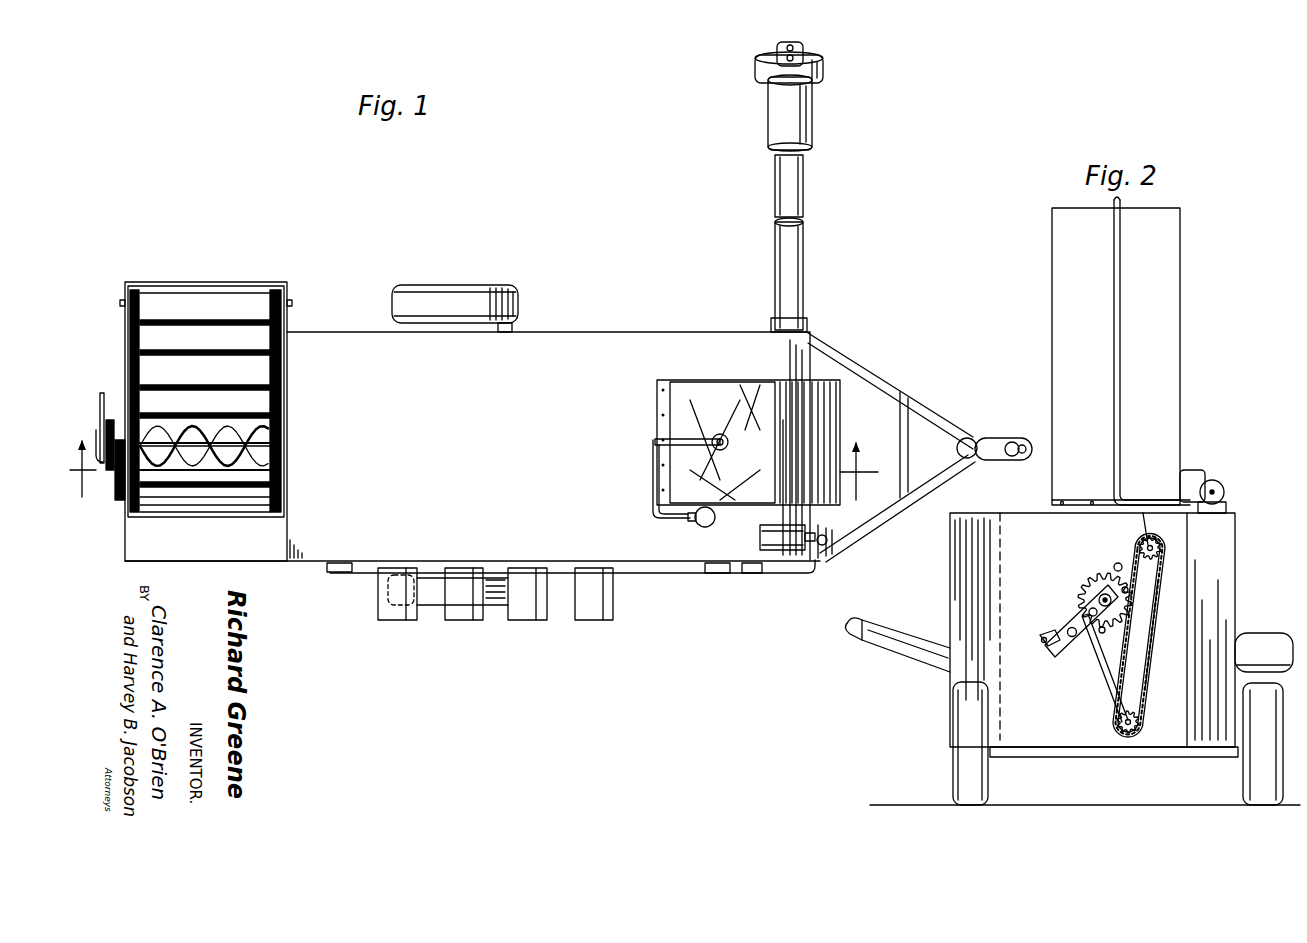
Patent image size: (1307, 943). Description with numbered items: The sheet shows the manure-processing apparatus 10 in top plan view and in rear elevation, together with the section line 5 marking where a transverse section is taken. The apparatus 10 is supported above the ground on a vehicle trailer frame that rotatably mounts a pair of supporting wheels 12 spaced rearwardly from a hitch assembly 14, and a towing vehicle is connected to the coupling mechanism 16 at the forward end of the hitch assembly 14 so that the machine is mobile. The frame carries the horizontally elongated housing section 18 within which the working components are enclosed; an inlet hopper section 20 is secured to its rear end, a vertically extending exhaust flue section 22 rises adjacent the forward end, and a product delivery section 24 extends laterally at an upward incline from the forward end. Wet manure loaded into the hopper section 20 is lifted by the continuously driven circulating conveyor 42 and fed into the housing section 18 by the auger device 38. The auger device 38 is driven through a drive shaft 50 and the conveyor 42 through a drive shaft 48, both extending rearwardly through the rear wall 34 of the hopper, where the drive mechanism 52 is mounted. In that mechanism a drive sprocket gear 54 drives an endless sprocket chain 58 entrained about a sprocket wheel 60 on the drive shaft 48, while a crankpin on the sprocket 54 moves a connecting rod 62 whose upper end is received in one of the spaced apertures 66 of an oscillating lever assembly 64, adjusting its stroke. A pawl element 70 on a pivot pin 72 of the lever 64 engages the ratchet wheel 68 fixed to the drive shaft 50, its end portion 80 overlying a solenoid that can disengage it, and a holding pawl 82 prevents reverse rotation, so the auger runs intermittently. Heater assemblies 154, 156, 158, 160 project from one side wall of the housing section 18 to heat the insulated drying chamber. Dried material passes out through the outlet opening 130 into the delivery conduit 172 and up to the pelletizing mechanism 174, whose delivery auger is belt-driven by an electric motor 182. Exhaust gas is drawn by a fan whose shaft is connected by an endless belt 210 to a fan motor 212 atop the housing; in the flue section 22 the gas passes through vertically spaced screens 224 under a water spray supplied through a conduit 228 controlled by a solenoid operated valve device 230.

In FIG. 1, the apparatus 10 is at (378, 280).
In FIG. 2, the apparatus 10 is at (1200, 305).
In FIG. 1, the supporting wheels 12 is at (451, 298).
In FIG. 2, the supporting wheels 12 is at (960, 770).
In FIG. 1, the hitch assembly 14 is at (872, 370).
In FIG. 1, the coupling mechanism 16 is at (1000, 438).
In FIG. 1, the housing section 18 is at (563, 360).
In FIG. 1, the inlet hopper section 20 is at (113, 362).
In FIG. 2, the inlet hopper section 20 is at (948, 583).
In FIG. 1, the exhaust flue section 22 is at (733, 378).
In FIG. 2, the exhaust flue section 22 is at (1072, 322).
In FIG. 1, the product delivery section 24 is at (815, 186).
In FIG. 2, the product delivery section 24 is at (873, 659).
In FIG. 2, the rear wall 34 is at (1000, 530).
In FIG. 1, the auger device 38 is at (162, 440).
In FIG. 1, the circulating conveyor 42 is at (223, 318).
In FIG. 2, the drive shaft 48 is at (1150, 538).
In FIG. 2, the drive shaft 50 is at (1090, 592).
In FIG. 1, the drive mechanism 52 is at (100, 488).
In FIG. 2, the drive mechanism 52 is at (1172, 603).
In FIG. 2, the drive sprocket gear 54 is at (1140, 727).
In FIG. 2, the endless sprocket chain 58 is at (1160, 625).
In FIG. 2, the sprocket wheel 60 is at (1165, 548).
In FIG. 2, the connecting rod 62 is at (1105, 672).
In FIG. 2, the oscillating lever assembly 64 is at (1063, 652).
In FIG. 2, the spaced apertures 66 is at (1088, 612).
In FIG. 2, the ratchet wheel 68 is at (1101, 577).
In FIG. 2, the pawl element 70 is at (1104, 633).
In FIG. 2, the pivot pin 72 is at (1067, 630).
In FIG. 2, the end portion 80 is at (1027, 672).
In FIG. 2, the holding pawl 82 is at (1115, 562).
In FIG. 1, the outlet opening 130 is at (770, 326).
In FIG. 1, the heater assembly 154 is at (388, 604).
In FIG. 1, the heater assembly 156 is at (460, 606).
In FIG. 1, the heater assembly 158 is at (533, 606).
In FIG. 1, the heater assembly 160 is at (599, 606).
In FIG. 1, the delivery conduit 172 is at (790, 262).
In FIG. 1, the pelletizing mechanism 174 is at (753, 75).
In FIG. 1, the electric motor 182 is at (794, 118).
In FIG. 1, the endless belt 210 is at (842, 525).
In FIG. 1, the fan motor 212 is at (768, 535).
In FIG. 1, the screens 224 is at (689, 402).
In FIG. 1, the conduit 228 is at (652, 473).
In FIG. 1, the solenoid operated valve device 230 is at (697, 522).
In FIG. 1, the section line 5- 5 is at (474, 458).